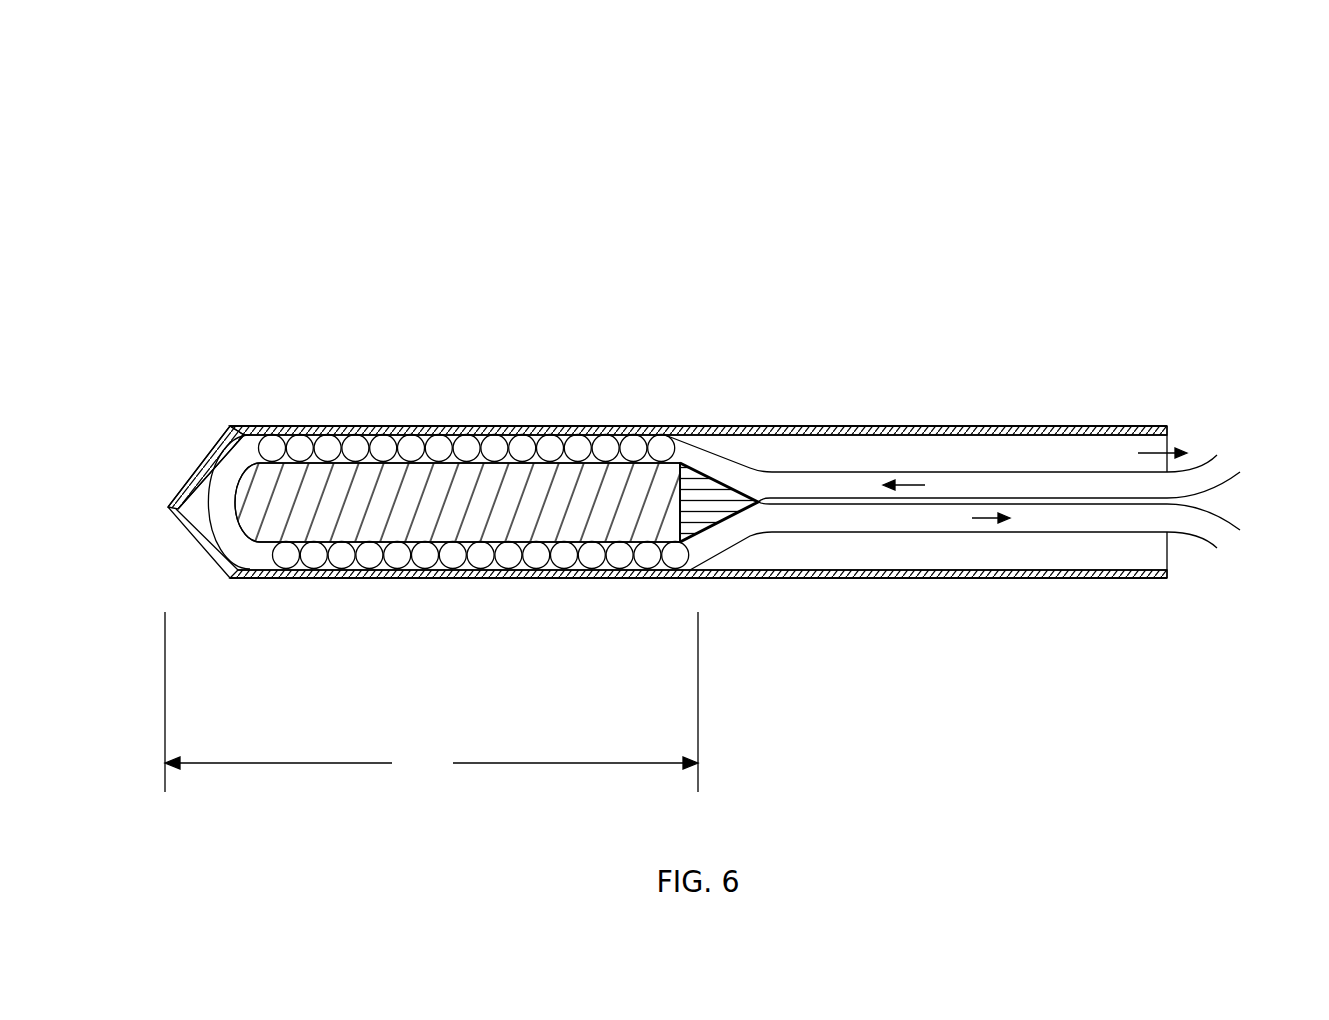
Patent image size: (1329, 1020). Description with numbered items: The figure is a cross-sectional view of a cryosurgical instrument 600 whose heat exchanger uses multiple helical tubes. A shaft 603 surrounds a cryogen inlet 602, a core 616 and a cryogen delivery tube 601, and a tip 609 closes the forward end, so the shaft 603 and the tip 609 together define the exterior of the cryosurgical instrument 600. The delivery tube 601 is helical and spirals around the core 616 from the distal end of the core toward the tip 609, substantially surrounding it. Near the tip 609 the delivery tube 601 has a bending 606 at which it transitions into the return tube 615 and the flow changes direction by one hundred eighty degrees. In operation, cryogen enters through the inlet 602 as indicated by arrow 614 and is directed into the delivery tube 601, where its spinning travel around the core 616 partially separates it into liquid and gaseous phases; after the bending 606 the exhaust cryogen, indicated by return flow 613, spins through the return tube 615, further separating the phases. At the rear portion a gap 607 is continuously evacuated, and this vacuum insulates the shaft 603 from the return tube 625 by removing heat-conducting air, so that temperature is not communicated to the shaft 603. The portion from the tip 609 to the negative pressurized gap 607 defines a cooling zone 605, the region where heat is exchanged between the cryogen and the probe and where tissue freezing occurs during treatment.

The cryosurgical instrument 600 is at (429, 185).
The cryogen delivery tube 601 is at (633, 447).
The cryogen inlet 602 is at (800, 467).
The shaft 603 is at (1015, 427).
The cooling zone 605 is at (431, 702).
The bending 606 is at (224, 482).
The gap 607 is at (1107, 445).
The tip 609 is at (172, 505).
The return flow 613 is at (988, 520).
The arrow indicating cryogen inflow 614 is at (902, 485).
The return tube 615 is at (675, 555).
The core 616 is at (520, 480).
The return tube 625 is at (1127, 532).